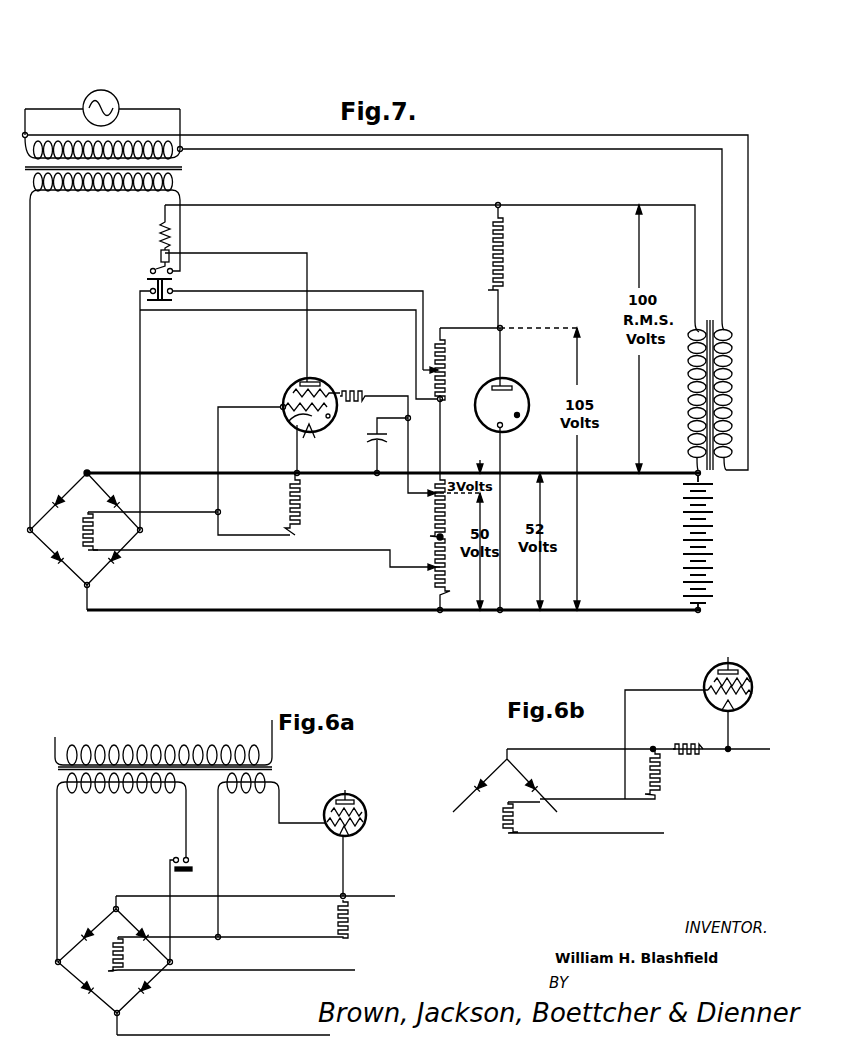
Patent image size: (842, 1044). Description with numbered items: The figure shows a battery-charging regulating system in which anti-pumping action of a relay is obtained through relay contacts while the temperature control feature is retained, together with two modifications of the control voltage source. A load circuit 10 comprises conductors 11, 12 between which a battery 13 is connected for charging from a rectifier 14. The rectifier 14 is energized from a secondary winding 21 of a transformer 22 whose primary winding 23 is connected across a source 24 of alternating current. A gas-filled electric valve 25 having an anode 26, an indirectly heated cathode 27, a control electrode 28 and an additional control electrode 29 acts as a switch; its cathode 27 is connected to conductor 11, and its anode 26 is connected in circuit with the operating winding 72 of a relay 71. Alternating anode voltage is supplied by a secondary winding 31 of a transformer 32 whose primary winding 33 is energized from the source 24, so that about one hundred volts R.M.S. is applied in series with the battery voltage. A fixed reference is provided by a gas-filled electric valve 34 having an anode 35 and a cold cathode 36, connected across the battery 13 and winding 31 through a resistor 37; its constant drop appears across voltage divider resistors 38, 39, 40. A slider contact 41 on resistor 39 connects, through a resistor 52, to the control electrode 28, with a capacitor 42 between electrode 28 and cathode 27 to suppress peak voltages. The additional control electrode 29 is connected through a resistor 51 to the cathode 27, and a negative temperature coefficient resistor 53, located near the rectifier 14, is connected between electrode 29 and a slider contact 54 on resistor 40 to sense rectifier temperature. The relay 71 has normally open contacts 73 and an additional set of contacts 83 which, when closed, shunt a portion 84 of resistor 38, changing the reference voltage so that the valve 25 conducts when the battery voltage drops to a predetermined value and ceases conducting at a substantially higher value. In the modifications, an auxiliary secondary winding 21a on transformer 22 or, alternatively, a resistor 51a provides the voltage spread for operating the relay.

In FIG. 7, the load circuit 10 is at (267, 470).
In FIG. 7, the conductor 11 is at (164, 473).
In FIG. 6A, the conductor 11 is at (258, 896).
In FIG. 6B, the conductor 11 is at (566, 750).
In FIG. 7, the conductor 12 is at (275, 612).
In FIG. 6A, the conductor 12 is at (222, 1034).
In FIG. 7, the battery 13 is at (740, 540).
In FIG. 7, the rectifier 14 is at (58, 491).
In FIG. 6A, the rectifier 14 is at (92, 912).
In FIG. 6B, the rectifier 14 is at (486, 778).
In FIG. 7, the secondary winding 21 is at (97, 187).
In FIG. 6A, the secondary winding 21 is at (125, 792).
In FIG. 6A, the auxiliary secondary winding 21a is at (271, 855).
In FIG. 7, the transformer 22 is at (208, 174).
In FIG. 6A, the transformer 22 is at (308, 768).
In FIG. 7, the primary winding 23 is at (110, 148).
In FIG. 6A, the primary winding 23 is at (170, 750).
In FIG. 7, the source of alternating current 24 is at (116, 105).
In FIG. 7, the gas-filled electric valve 25 is at (337, 381).
In FIG. 6A, the gas-filled electric valve 25 is at (366, 805).
In FIG. 6B, the gas-filled electric valve 25 is at (751, 672).
In FIG. 7, the anode 26 is at (300, 383).
In FIG. 7, the cathode 27 is at (288, 422).
In FIG. 7, the control electrode 28 is at (328, 393).
In FIG. 7, the additional control electrode 29 is at (281, 406).
In FIG. 6A, the additional control electrode 29 is at (328, 837).
In FIG. 7, the secondary winding 31 is at (690, 376).
In FIG. 7, the transformer 32 is at (717, 310).
In FIG. 7, the primary winding 33 is at (729, 374).
In FIG. 7, the electric valve 34 is at (535, 380).
In FIG. 7, the anode 35 is at (498, 385).
In FIG. 7, the cold cathode 36 is at (497, 428).
In FIG. 7, the resistor 37 is at (505, 256).
In FIG. 7, the resistor 38 is at (444, 349).
In FIG. 7, the resistor 39 is at (442, 512).
In FIG. 7, the resistor 40 is at (445, 582).
In FIG. 7, the slider contact 41 is at (434, 495).
In FIG. 7, the capacitor 42 is at (373, 440).
In FIG. 7, the resistor 51 is at (300, 502).
In FIG. 6A, the resistor 51 is at (350, 915).
In FIG. 6B, the resistor 51 is at (668, 785).
In FIG. 6B, the resistor 51a is at (709, 748).
In FIG. 7, the resistor 52 is at (346, 400).
In FIG. 7, the negative temperature coefficient resistor 53 is at (93, 535).
In FIG. 6A, the negative temperature coefficient resistor 53 is at (125, 953).
In FIG. 6B, the negative temperature coefficient resistor 53 is at (518, 820).
In FIG. 7, the slider contact 54 is at (434, 573).
In FIG. 7, the relay 71 is at (145, 239).
In FIG. 7, the operating winding 72 is at (168, 243).
In FIG. 7, the contacts 73 is at (150, 266).
In FIG. 6A, the contacts 73 is at (188, 859).
In FIG. 7, the contacts 83 is at (147, 290).
In FIG. 7, the portion of resistor 84 is at (442, 399).